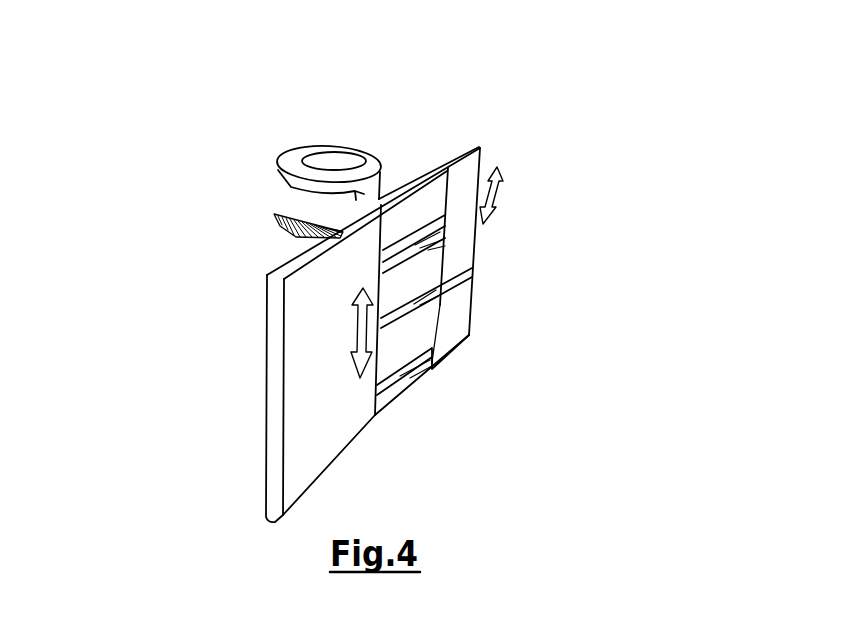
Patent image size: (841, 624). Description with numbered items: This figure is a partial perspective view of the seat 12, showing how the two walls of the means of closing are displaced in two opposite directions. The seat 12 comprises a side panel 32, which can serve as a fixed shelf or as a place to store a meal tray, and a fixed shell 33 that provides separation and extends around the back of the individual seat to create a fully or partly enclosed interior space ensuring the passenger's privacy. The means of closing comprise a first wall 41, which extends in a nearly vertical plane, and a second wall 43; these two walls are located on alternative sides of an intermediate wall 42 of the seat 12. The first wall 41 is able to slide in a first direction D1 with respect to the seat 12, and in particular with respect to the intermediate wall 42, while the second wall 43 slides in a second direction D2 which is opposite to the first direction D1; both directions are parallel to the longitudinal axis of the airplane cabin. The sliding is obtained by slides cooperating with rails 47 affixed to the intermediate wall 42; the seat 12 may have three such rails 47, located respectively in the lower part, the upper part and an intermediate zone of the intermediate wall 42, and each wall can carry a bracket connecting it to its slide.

The seat 12 is at (282, 148).
The side panel 32 is at (458, 324).
The fixed shell 33 is at (273, 213).
The first wall 41 is at (478, 178).
The intermediate wall 42 is at (432, 369).
The second wall 43 is at (307, 362).
The rail 47 is at (428, 248).
The first direction D1 is at (504, 178).
The second direction D2 is at (352, 326).